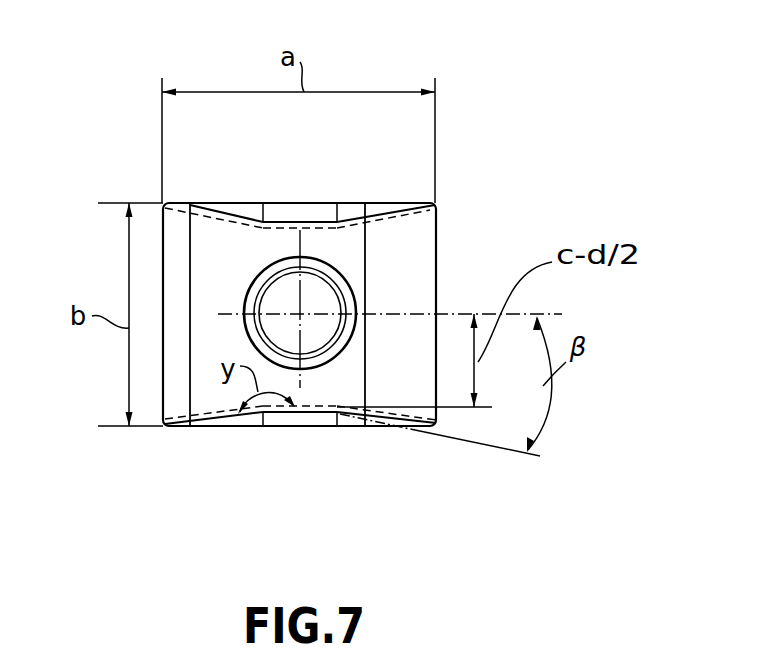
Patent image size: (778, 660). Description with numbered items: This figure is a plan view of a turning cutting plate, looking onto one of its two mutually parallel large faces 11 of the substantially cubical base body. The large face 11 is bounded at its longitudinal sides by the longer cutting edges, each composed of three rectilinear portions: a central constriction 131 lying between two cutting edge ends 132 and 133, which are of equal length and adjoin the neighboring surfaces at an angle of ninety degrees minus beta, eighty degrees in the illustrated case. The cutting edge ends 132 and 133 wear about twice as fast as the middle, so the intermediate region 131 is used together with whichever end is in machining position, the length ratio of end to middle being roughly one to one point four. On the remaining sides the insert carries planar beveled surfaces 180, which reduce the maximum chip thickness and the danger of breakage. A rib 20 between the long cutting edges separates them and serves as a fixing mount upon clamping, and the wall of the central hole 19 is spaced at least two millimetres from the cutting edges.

The large face 11 is at (208, 267).
The hole 19 is at (322, 302).
The rib 20 is at (321, 203).
The central constriction 131 is at (287, 214).
The cutting edge end 132 is at (380, 202).
The cutting edge end 133 is at (228, 205).
The beveled surface 180 is at (413, 283).